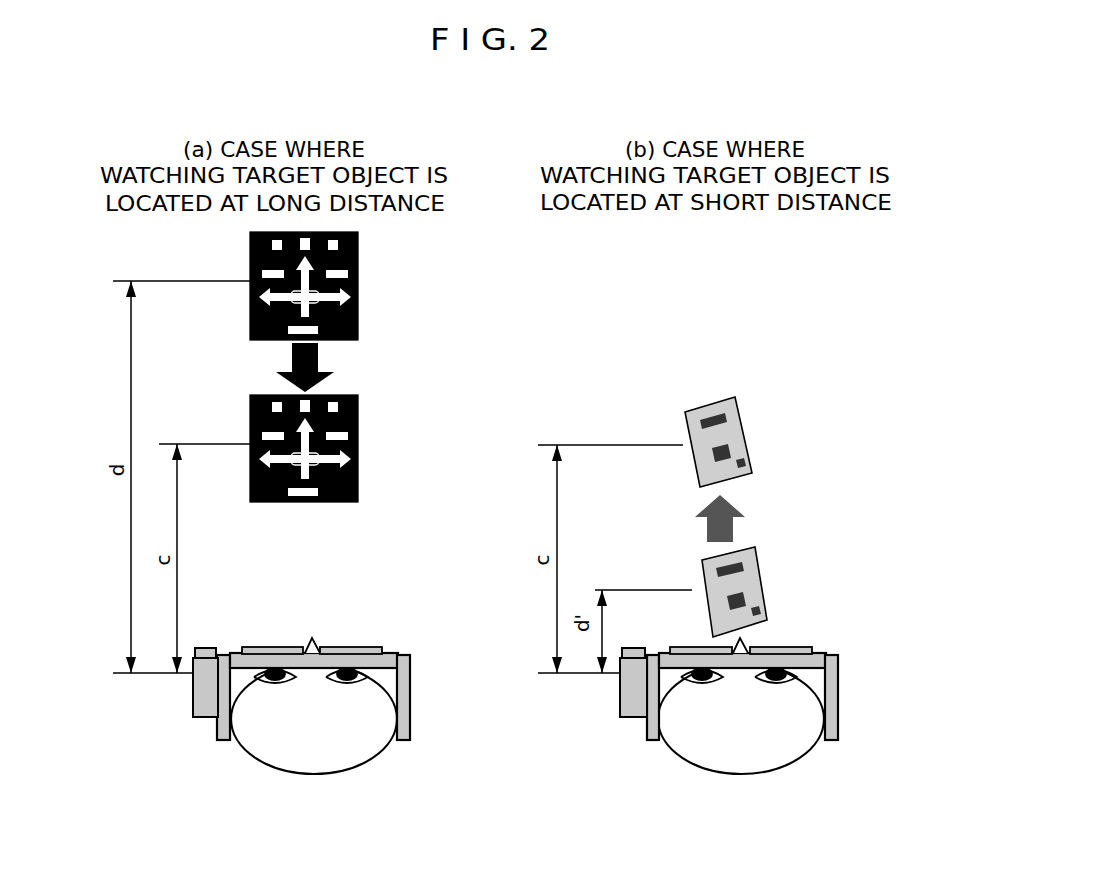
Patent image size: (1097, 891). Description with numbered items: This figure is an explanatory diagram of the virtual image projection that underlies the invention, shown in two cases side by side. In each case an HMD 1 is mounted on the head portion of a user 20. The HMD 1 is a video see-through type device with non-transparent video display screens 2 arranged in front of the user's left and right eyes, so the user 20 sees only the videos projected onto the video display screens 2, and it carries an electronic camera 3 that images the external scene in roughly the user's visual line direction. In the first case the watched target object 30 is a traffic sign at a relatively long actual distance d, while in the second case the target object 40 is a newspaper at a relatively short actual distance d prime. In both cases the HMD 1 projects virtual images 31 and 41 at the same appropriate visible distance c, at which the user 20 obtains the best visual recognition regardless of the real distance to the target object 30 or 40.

The HMD 1 is at (403, 705).
The video display screen 2 is at (262, 643).
The electronic camera 3 is at (210, 712).
The user 20 is at (270, 752).
The target object 30 is at (358, 290).
The virtual image 31 is at (358, 452).
The target object 40 is at (757, 587).
The virtual image 41 is at (750, 438).